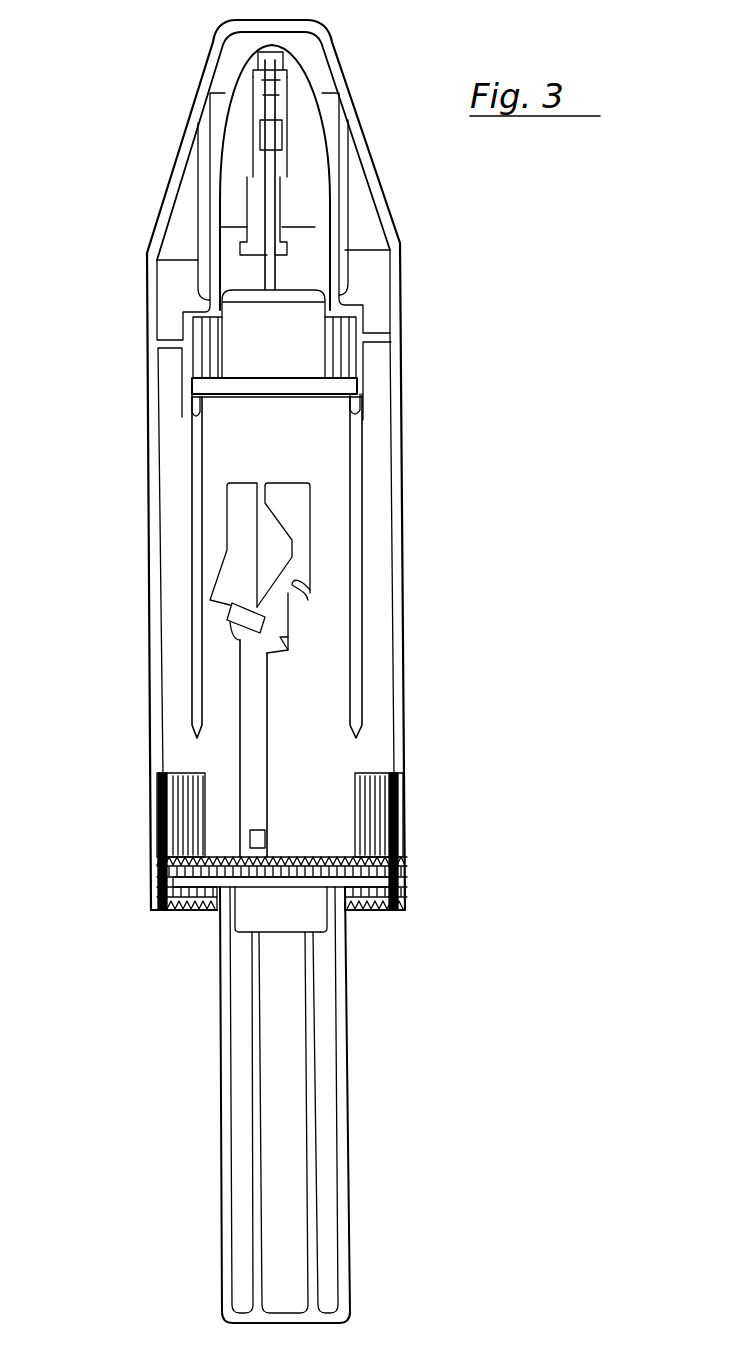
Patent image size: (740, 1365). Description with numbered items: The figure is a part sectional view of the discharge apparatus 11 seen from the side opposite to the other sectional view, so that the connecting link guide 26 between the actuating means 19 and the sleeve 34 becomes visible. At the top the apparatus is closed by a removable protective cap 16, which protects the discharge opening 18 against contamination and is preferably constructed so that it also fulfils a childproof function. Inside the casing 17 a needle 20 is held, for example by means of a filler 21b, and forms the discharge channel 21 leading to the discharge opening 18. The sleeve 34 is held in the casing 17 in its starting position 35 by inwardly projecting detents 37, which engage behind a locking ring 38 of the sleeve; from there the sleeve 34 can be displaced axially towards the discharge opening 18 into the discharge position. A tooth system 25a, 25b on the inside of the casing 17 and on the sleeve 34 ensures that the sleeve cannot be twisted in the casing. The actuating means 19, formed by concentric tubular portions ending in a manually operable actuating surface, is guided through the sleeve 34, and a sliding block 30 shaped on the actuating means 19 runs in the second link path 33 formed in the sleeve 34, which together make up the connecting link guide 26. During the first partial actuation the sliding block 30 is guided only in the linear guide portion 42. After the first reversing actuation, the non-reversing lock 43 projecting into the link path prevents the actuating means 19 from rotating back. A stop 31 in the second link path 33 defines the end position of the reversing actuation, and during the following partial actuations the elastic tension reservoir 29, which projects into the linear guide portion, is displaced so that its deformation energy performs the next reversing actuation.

The discharge apparatus 11 is at (515, 493).
The protective cap 16 is at (195, 113).
The casing 17 is at (152, 370).
The discharge opening 18 is at (286, 36).
The actuating means 19 is at (325, 996).
The needle 20 is at (273, 267).
The discharge channel 21 is at (283, 208).
The filler 21b is at (292, 158).
The tooth system 25a is at (185, 828).
The tooth system 25b is at (177, 887).
The connecting link guide 26 is at (335, 684).
The tension reservoir 29 is at (284, 559).
The sliding block 30 is at (268, 841).
The stop 31 is at (300, 592).
The second link path 33 is at (262, 762).
The sleeve 34 is at (303, 446).
The starting position 35 is at (357, 326).
The detents 37 is at (363, 403).
The locking ring 38 is at (320, 385).
The linear guide portion 42 is at (222, 698).
The non-reversing lock 43 is at (235, 632).